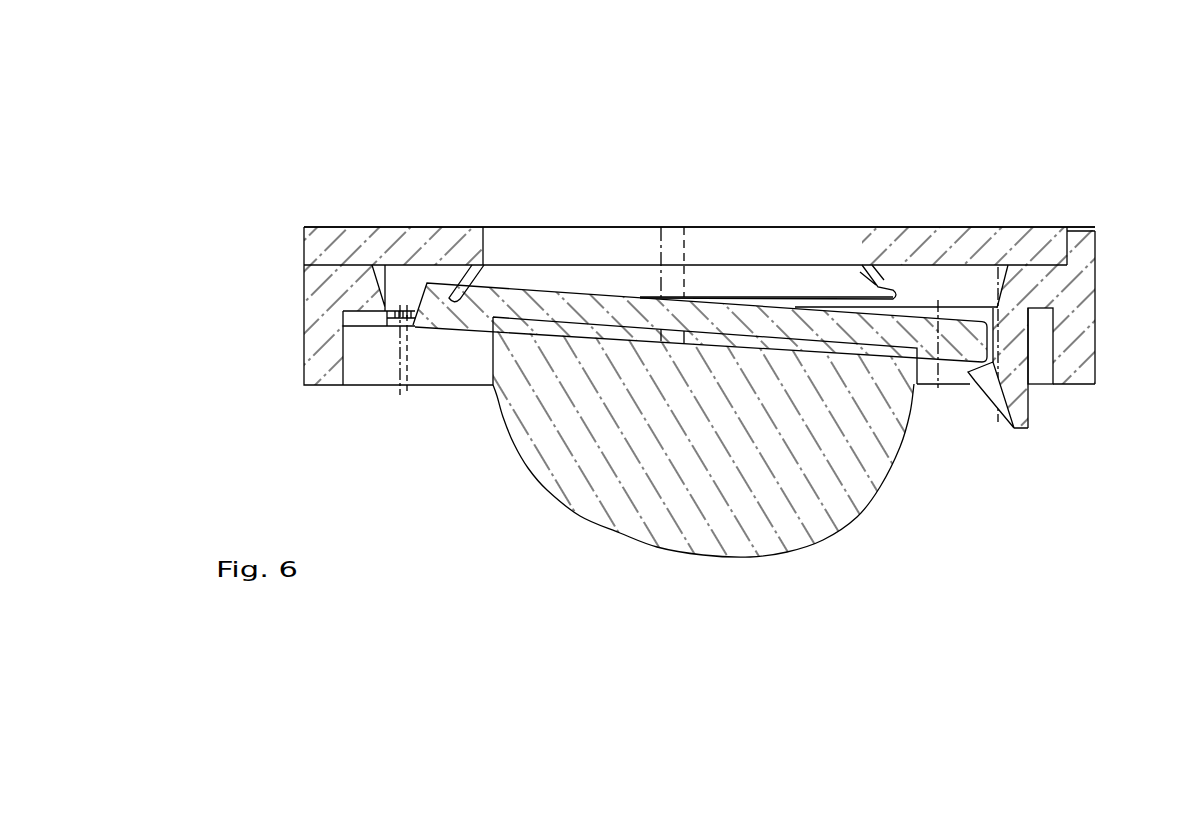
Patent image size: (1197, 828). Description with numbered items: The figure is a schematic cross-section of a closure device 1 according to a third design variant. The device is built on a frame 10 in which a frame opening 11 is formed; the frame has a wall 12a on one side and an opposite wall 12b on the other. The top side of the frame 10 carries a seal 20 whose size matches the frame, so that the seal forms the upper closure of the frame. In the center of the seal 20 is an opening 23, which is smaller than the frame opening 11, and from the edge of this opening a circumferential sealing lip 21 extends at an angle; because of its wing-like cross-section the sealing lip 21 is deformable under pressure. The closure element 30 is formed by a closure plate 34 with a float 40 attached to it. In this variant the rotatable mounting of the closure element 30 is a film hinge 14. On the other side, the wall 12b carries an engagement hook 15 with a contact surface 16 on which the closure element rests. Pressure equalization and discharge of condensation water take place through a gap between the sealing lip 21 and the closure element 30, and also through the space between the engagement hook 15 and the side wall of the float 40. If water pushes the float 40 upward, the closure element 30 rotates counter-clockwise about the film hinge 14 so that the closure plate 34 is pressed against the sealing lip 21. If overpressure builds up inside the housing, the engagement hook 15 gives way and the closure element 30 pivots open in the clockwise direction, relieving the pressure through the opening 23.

The closure device 1 is at (1070, 106).
The frame 10 is at (1077, 293).
The frame opening 11 is at (1007, 272).
The wall of the frame 12a is at (325, 333).
The opposite wall of the frame 12b is at (1078, 328).
The film hinge 14 is at (393, 324).
The engagement hook 15 is at (1013, 370).
The contact surface 16 is at (993, 362).
The seal 20 is at (1027, 236).
The sealing lip 21 is at (452, 296).
The opening of the seal 23 is at (483, 232).
The closure element 30 is at (866, 516).
The closure plate 34 is at (583, 307).
The float 40 is at (707, 443).